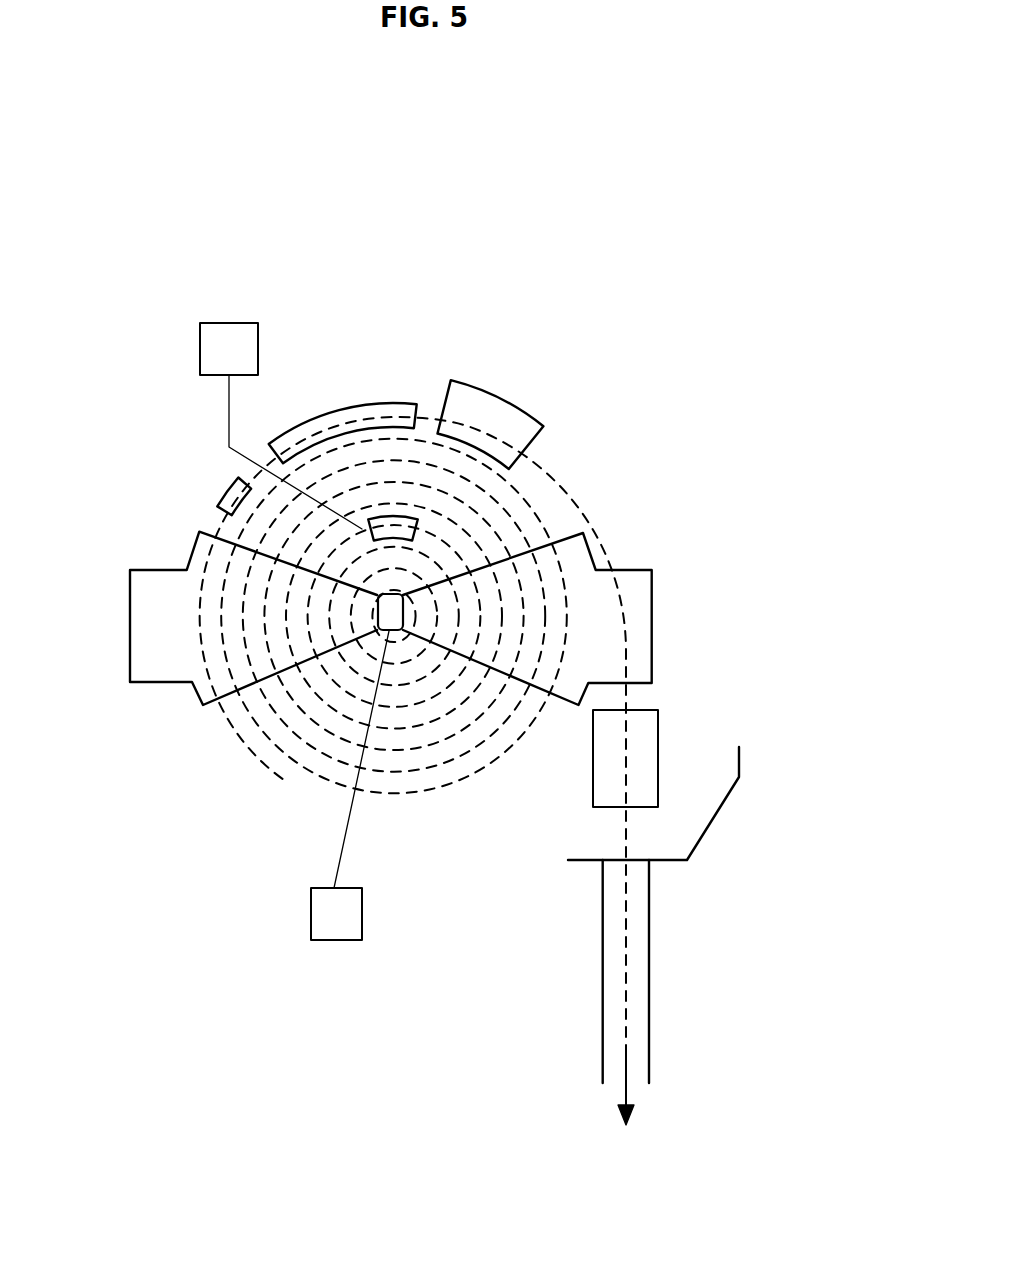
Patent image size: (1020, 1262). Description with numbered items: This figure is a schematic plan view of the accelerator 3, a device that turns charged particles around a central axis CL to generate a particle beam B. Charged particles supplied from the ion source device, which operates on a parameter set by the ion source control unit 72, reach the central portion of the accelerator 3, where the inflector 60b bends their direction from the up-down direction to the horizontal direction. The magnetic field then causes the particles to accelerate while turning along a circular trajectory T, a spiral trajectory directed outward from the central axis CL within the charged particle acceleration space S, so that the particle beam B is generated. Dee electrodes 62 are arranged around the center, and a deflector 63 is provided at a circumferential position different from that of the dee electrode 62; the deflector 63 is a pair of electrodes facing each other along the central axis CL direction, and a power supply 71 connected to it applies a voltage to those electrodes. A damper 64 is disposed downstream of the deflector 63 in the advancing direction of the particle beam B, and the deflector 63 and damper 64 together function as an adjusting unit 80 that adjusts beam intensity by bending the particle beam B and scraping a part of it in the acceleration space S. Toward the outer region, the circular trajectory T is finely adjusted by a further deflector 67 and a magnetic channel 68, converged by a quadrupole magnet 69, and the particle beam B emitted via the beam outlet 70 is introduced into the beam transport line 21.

The accelerator 3 is at (692, 309).
The beam transport line 21 is at (652, 966).
The inflector 60b is at (380, 631).
The dee electrodes 62 is at (130, 606).
The deflector 63 is at (397, 516).
The damper 64 is at (232, 484).
The deflector 67 is at (331, 418).
The magnetic channel 68 is at (487, 392).
The quadrupole magnet 69 is at (659, 737).
The beam outlet 70 is at (740, 760).
The power supply 71 is at (217, 323).
The ion source control unit 72 is at (311, 916).
The adjusting unit 80 is at (267, 450).
The charged particle acceleration space S is at (358, 654).
The circular trajectory T is at (424, 800).
The particle beam B is at (627, 1063).
The central axis CL is at (410, 606).